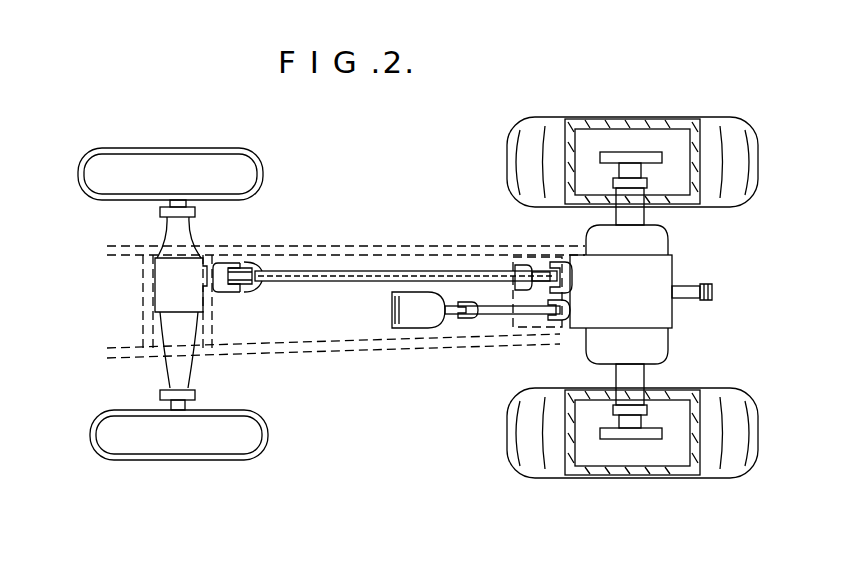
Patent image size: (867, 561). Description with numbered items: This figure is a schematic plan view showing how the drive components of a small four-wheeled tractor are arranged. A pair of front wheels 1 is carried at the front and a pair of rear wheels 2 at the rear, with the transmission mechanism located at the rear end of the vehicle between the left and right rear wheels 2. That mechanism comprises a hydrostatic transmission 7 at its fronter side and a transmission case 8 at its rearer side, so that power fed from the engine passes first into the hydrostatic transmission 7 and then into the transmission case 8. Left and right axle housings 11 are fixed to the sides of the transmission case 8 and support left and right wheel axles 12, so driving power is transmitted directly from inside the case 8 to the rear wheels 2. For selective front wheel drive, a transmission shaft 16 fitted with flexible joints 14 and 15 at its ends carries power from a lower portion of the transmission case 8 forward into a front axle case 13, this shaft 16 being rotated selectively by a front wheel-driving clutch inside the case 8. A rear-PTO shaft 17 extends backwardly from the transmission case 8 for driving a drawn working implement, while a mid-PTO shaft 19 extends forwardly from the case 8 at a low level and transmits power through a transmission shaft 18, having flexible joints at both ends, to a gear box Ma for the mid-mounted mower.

The front wheels 1 is at (124, 163).
The rear wheels 2 is at (720, 128).
The hydrostatic transmission 7 is at (527, 318).
The transmission case 8 is at (688, 275).
The axle housings 11 is at (622, 210).
The wheel axles 12 is at (627, 160).
The front axle case 13 is at (160, 272).
The flexible joint 14 is at (548, 268).
The flexible joint 15 is at (250, 270).
The transmission shaft 16 is at (381, 272).
The rear-PTO shaft 17 is at (690, 305).
The transmission shaft 18 is at (490, 318).
The mid-PTO shaft 19 is at (558, 323).
The gear box Ma is at (418, 320).